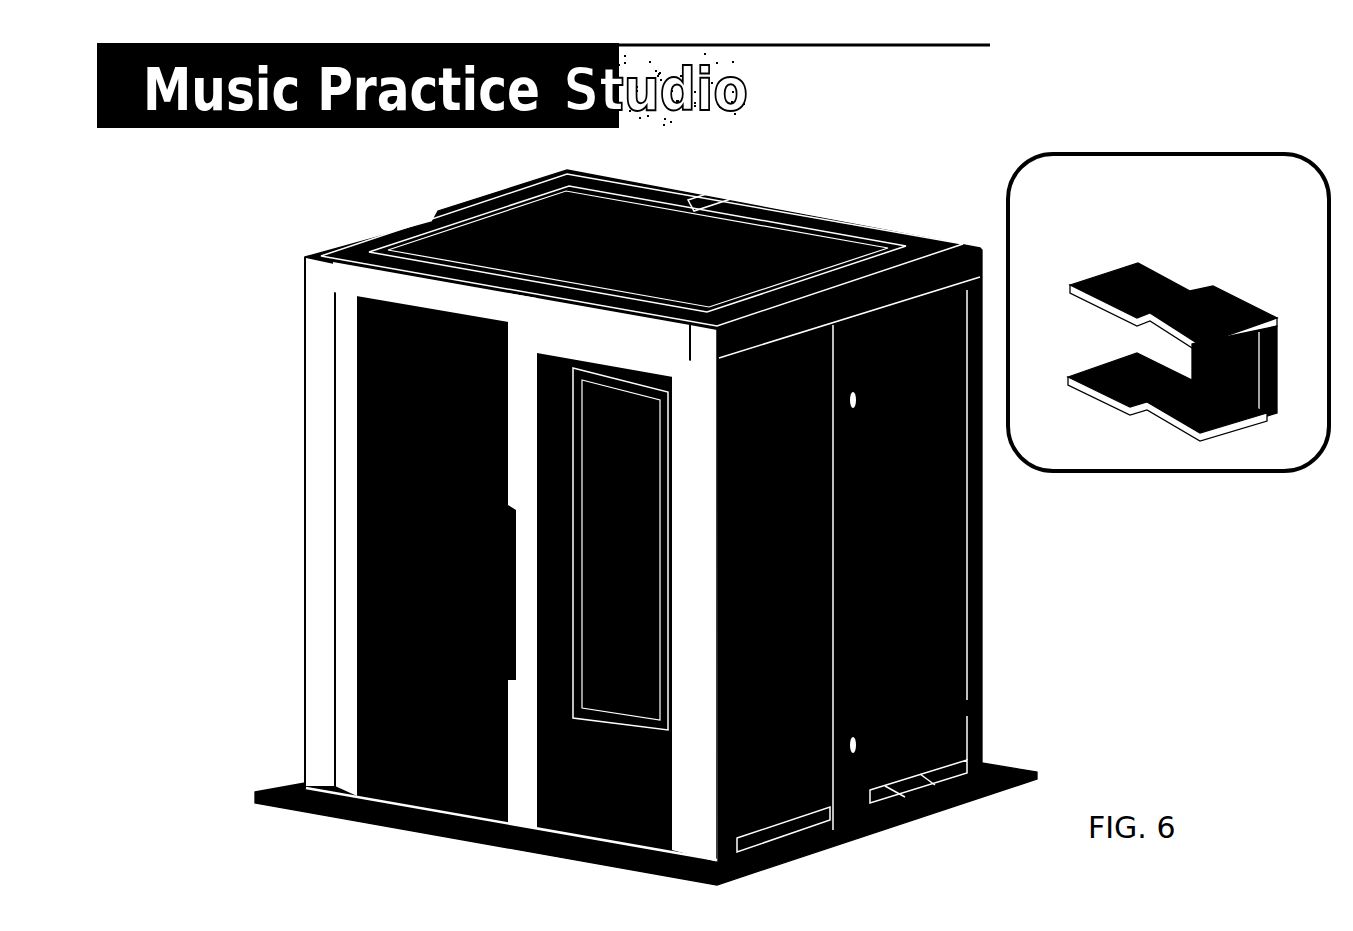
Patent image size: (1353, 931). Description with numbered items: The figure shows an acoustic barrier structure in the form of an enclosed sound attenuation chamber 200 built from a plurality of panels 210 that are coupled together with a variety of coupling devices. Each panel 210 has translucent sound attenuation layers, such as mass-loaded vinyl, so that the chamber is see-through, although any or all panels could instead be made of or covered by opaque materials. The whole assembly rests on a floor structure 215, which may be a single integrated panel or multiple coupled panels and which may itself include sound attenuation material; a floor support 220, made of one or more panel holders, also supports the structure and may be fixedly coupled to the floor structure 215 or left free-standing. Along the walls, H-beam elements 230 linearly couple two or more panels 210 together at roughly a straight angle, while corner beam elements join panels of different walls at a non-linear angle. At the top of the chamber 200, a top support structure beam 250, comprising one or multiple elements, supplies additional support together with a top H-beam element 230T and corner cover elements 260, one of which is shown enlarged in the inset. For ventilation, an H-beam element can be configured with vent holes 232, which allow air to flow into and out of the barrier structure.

The enclosed sound attenuation chamber 200 is at (739, 519).
The panel 210 is at (590, 600).
The floor structure 215 is at (273, 787).
The floor support 220 is at (829, 837).
The H-beam element 230 is at (917, 820).
The top H-beam element 230T is at (720, 177).
The vent holes 232 is at (967, 712).
The top support structure beam 250 is at (853, 230).
The corner cover element 260 is at (318, 273).